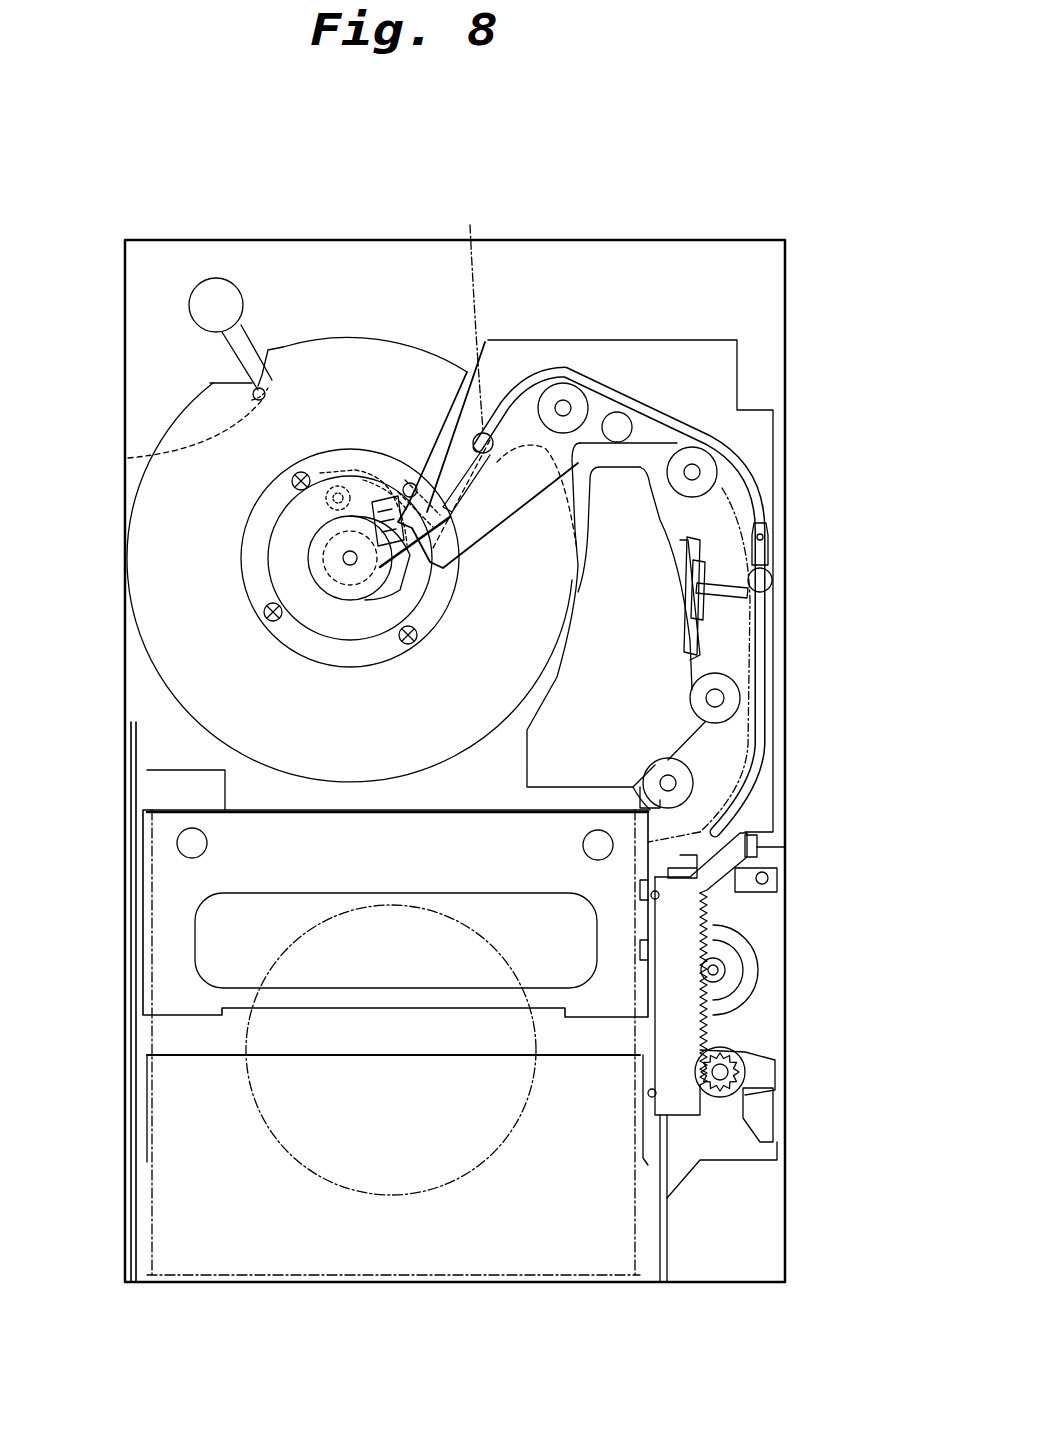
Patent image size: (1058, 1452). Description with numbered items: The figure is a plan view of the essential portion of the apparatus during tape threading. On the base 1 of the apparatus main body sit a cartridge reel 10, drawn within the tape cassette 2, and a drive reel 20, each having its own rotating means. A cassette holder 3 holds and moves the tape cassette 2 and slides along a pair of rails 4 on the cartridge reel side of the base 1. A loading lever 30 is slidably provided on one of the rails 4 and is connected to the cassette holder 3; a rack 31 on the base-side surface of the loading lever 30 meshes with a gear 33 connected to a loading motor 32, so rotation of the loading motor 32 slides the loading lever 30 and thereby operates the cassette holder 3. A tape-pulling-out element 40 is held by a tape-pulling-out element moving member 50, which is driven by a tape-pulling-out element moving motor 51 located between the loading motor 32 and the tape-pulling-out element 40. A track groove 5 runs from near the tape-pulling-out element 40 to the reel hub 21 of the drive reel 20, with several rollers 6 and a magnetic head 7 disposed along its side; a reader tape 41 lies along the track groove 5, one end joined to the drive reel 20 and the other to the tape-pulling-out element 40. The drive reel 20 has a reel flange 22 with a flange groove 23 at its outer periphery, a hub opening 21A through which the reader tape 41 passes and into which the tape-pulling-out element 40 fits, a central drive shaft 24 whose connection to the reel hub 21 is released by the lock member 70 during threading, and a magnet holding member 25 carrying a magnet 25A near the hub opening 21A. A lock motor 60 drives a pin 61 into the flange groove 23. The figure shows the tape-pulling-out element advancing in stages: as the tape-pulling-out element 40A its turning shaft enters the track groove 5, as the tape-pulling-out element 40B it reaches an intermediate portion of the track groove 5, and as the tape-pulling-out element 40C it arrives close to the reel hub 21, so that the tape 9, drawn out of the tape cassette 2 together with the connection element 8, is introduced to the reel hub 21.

The base 1 is at (775, 260).
The tape cassette 2 is at (278, 1257).
The cassette holder 3 is at (160, 930).
The rails 4 is at (131, 1080).
The track groove 5 is at (765, 660).
The rollers 6 is at (561, 383).
The magnetic head 7 is at (772, 578).
The connection element 8 is at (747, 592).
The tape 9 is at (650, 830).
The cartridge reel 10 is at (408, 1195).
The drive reel 20 is at (165, 530).
The reel hub 21 is at (320, 470).
The hub opening 21A is at (450, 525).
The reel flange 22 is at (150, 630).
The flange groove 23 is at (180, 452).
The drive shaft 24 is at (347, 585).
The magnet holding member 25 is at (385, 585).
The magnet 25A is at (420, 600).
The loading lever 30 is at (690, 1105).
The rack 31 is at (720, 970).
The loading motor 32 is at (740, 1060).
The gear 33 is at (745, 1072).
The tape-pulling-out element 40 is at (772, 545).
The tape-pulling-out element 40A is at (745, 810).
The tape-pulling-out element 40B is at (770, 525).
The tape-pulling-out element 40C is at (466, 354).
The reader tape 41 is at (602, 408).
The tape-pulling-out element moving member 50 is at (770, 848).
The tape-pulling-out element moving motor 51 is at (745, 985).
The lock motor 60 is at (215, 295).
The pin 61 is at (252, 394).
The lock member 70 is at (388, 470).